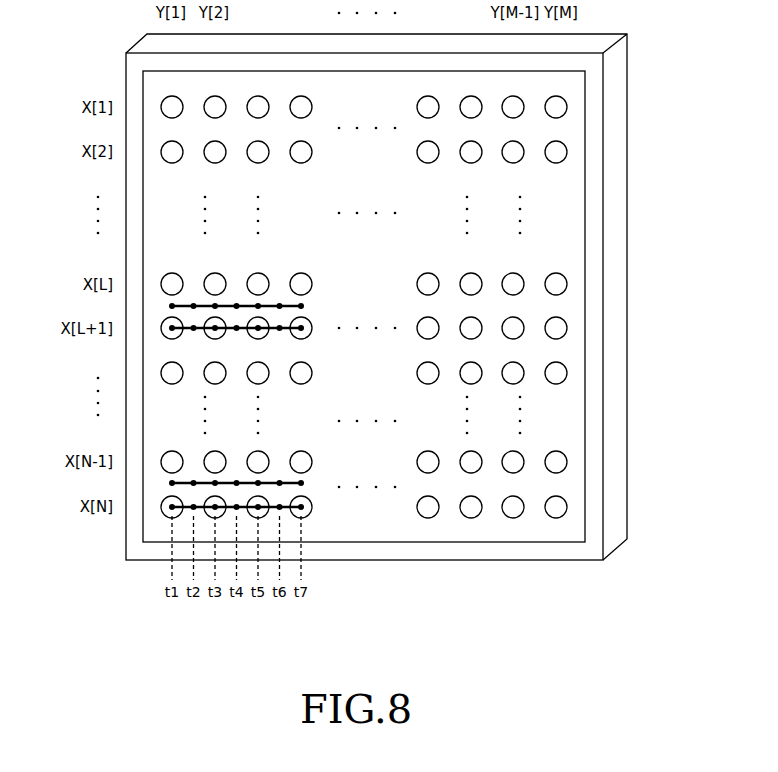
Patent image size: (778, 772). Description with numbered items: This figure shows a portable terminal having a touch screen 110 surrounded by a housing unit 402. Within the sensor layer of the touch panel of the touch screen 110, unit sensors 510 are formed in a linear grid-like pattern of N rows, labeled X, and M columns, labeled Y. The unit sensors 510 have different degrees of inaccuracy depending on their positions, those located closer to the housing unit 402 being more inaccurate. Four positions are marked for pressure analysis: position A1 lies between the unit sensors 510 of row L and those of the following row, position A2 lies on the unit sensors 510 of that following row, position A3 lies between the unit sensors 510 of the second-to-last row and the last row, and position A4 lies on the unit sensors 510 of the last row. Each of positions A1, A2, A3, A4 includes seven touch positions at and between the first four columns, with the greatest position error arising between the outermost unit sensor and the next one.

The touch screen 110 is at (568, 217).
The housing unit 402 is at (619, 154).
The unit sensors 510 is at (513, 107).
The position A1 is at (202, 305).
The position A2 is at (202, 330).
The position A3 is at (202, 483).
The position A4 is at (202, 507).